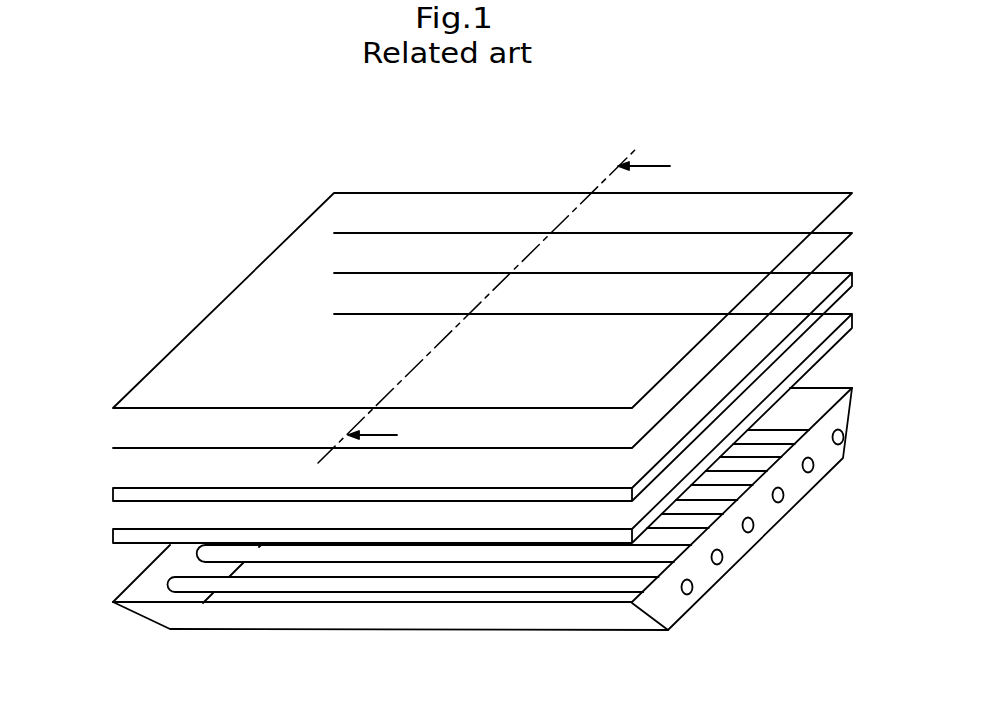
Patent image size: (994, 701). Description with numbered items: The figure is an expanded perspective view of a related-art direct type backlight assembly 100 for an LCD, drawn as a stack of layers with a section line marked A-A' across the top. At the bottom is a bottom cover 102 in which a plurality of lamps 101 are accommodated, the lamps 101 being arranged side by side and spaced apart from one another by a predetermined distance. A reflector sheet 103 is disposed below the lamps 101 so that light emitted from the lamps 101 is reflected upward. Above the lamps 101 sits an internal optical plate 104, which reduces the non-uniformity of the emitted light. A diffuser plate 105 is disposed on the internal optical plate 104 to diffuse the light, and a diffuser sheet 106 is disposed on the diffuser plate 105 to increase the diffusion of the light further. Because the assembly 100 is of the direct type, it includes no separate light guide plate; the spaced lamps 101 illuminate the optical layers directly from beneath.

The direct type backlight assembly 100 is at (87, 407).
The lamps 101 is at (422, 555).
The bottom cover 102 is at (843, 412).
The reflector sheet 103 is at (648, 570).
The internal optical plate 104 is at (852, 322).
The diffuser plate 105 is at (852, 280).
The diffuser sheet 106 is at (850, 252).